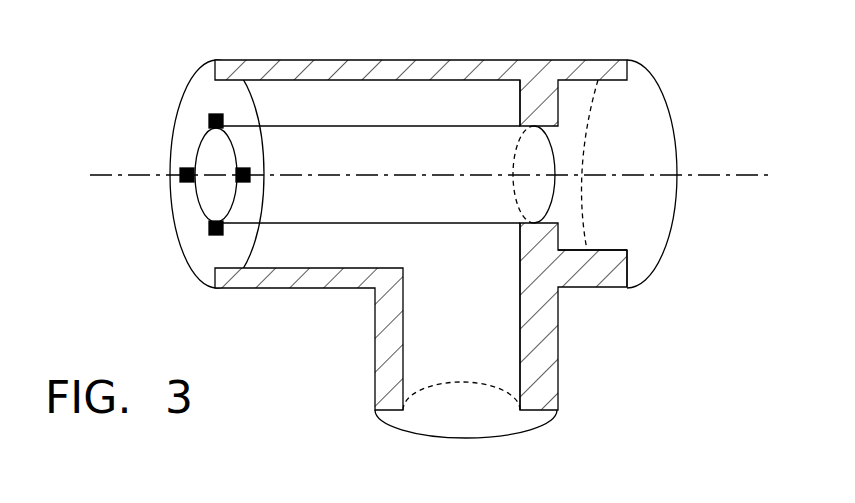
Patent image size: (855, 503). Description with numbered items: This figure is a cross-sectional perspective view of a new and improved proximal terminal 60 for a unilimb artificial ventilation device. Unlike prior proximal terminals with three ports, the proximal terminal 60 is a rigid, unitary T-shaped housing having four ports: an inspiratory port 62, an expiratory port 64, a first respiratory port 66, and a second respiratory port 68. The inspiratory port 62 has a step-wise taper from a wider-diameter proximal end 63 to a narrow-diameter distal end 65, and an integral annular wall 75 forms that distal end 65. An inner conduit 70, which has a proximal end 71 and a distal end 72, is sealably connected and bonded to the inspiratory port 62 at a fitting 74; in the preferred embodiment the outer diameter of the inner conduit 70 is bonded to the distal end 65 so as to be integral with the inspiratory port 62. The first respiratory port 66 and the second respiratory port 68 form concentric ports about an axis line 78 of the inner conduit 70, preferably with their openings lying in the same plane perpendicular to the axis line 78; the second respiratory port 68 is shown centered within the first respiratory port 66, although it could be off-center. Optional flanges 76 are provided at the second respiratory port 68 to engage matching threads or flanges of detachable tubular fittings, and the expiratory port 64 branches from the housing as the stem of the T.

The proximal terminal 60 is at (344, 333).
The inspiratory port 62 is at (637, 173).
The proximal end 63 is at (627, 287).
The expiratory port 64 is at (480, 424).
The distal end 65 is at (517, 277).
The first respiratory port 66 is at (190, 98).
The second respiratory port 68 is at (210, 183).
The inner conduit 70 is at (402, 126).
The proximal end 71 is at (512, 126).
The distal end 72 is at (245, 212).
The fitting 74 is at (543, 98).
The annular wall 75 is at (558, 237).
The flanges 76 is at (208, 121).
The axis line 78 is at (747, 176).